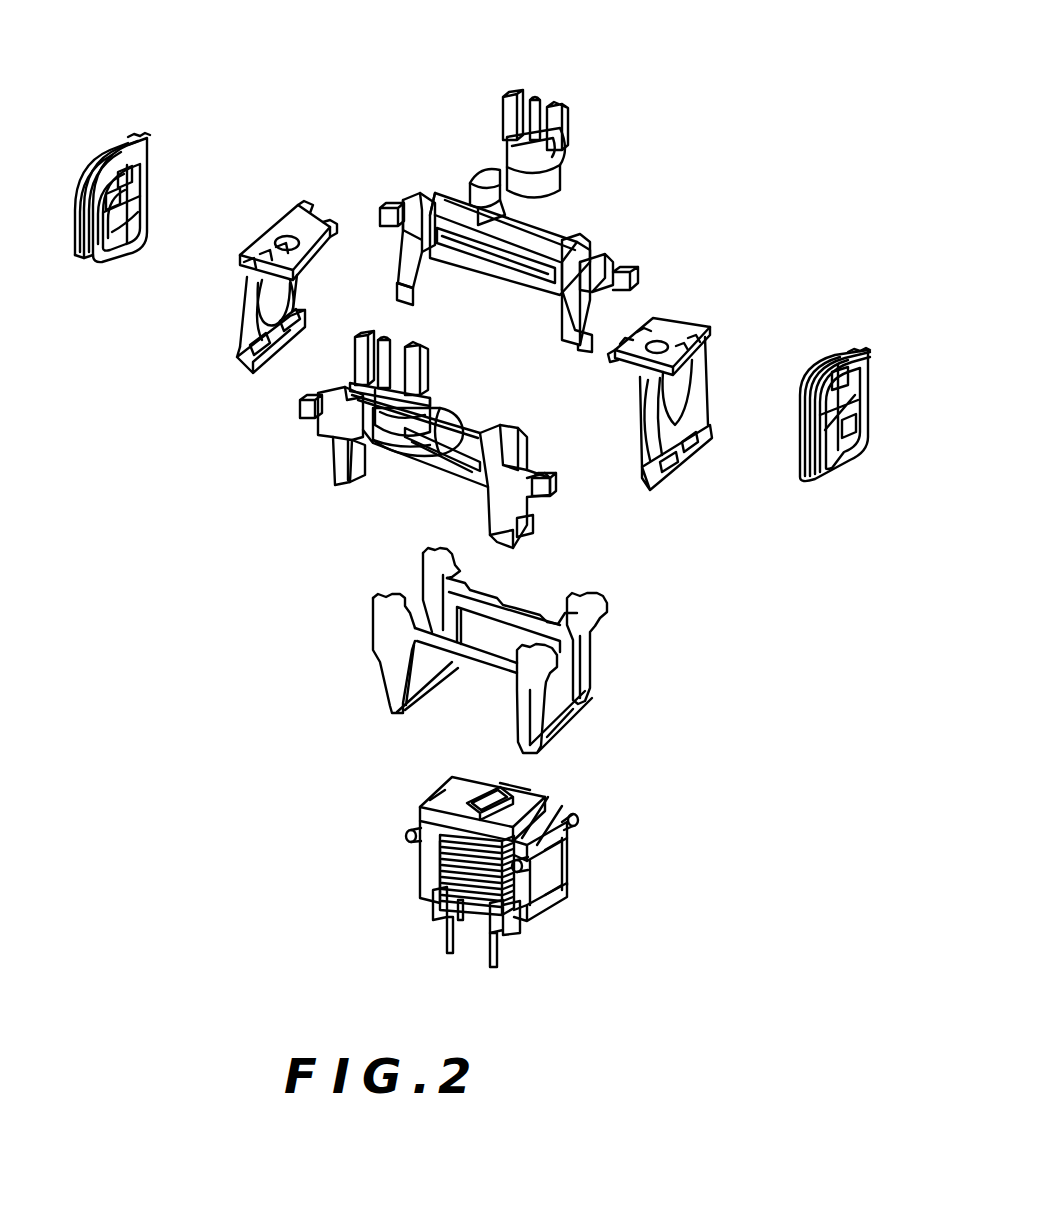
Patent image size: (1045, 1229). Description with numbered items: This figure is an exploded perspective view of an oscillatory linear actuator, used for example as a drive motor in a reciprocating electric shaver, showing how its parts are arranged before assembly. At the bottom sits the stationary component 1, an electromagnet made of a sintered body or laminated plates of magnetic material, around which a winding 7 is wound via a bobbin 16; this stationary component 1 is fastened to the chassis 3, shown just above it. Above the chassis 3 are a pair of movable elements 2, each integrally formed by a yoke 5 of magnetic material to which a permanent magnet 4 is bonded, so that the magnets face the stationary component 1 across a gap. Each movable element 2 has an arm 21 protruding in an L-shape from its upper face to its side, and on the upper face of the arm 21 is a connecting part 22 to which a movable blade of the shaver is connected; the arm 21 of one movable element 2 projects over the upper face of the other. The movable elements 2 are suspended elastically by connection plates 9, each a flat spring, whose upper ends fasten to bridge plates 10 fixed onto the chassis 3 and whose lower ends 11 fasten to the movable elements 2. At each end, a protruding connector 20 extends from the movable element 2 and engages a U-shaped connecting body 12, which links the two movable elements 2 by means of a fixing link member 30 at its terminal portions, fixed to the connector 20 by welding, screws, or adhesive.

The stationary component 1 is at (427, 857).
The movable element 2 is at (440, 200).
The chassis 3 is at (392, 648).
The permanent magnet 4 is at (543, 247).
The yoke 5 is at (467, 243).
The winding 7 is at (438, 897).
The connection plate 9 is at (252, 318).
The bridge plate 10 is at (290, 213).
The lower end 11 is at (660, 477).
The connecting body 12 is at (92, 158).
The bobbin 16 is at (507, 927).
The protruding connector 20 is at (390, 207).
The arm 21 is at (492, 170).
The connecting part 22 is at (537, 97).
The fixing link member 30 is at (135, 177).